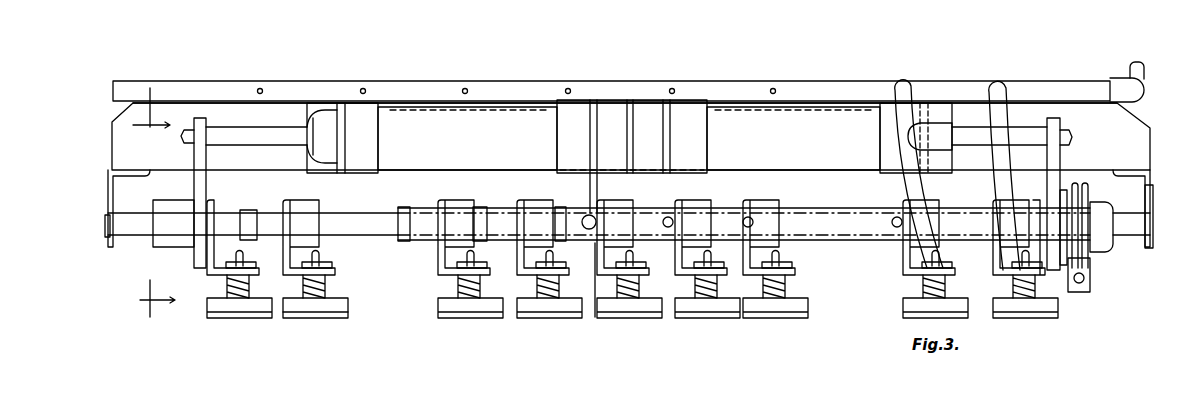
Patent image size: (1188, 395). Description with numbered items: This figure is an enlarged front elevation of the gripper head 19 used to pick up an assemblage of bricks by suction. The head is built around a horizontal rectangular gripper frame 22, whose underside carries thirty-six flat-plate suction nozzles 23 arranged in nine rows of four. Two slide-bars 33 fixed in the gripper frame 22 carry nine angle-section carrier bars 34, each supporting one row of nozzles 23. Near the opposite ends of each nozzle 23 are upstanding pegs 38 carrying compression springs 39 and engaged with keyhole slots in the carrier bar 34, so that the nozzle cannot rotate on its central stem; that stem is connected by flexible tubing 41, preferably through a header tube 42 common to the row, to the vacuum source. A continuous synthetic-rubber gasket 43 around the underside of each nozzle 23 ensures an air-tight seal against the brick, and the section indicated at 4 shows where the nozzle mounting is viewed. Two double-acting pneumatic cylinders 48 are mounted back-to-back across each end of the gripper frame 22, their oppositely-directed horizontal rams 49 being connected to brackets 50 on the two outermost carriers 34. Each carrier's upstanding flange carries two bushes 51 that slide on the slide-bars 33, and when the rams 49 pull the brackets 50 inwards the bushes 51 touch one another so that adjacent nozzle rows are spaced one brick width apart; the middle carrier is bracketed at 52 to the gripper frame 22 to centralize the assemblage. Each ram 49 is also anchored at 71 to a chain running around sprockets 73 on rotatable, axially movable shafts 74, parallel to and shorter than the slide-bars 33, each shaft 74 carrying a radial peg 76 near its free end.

The section line 4- 4 is at (154, 202).
The gripper head 19 is at (507, 133).
The gripper frame 22 is at (282, 105).
The suction nozzle 23 is at (258, 319).
The slide-bar 33 is at (367, 217).
The angle-section bar 34 is at (208, 232).
The upstanding peg 38 is at (241, 257).
The compression spring 39 is at (328, 288).
The flexible tubing 41 is at (1000, 189).
The header tube 42 is at (446, 100).
The gasket 43 is at (336, 318).
The double-acting pneumatic cylinder 48 is at (541, 156).
The horizontal ram 49 is at (231, 131).
The bracket 50 is at (194, 155).
The bush 51 is at (255, 210).
The bracket 52 is at (599, 190).
The anchorage 71 is at (1080, 293).
The sprocket 73 is at (1088, 266).
The shaft 74 is at (830, 209).
The radial peg 76 is at (587, 215).